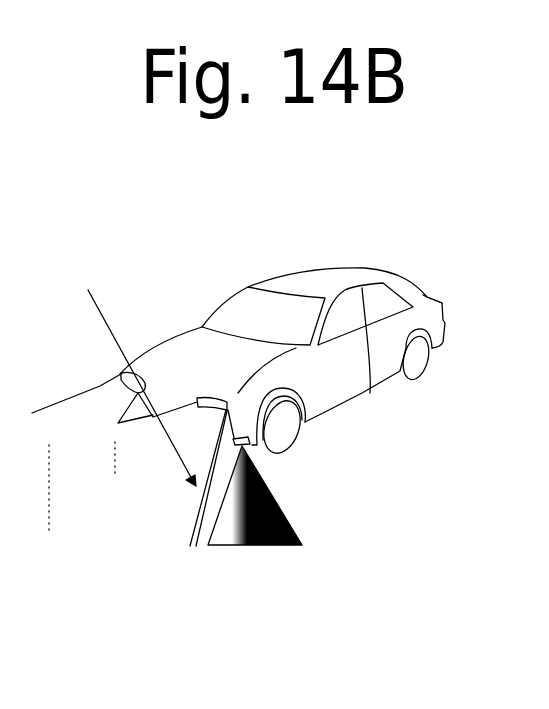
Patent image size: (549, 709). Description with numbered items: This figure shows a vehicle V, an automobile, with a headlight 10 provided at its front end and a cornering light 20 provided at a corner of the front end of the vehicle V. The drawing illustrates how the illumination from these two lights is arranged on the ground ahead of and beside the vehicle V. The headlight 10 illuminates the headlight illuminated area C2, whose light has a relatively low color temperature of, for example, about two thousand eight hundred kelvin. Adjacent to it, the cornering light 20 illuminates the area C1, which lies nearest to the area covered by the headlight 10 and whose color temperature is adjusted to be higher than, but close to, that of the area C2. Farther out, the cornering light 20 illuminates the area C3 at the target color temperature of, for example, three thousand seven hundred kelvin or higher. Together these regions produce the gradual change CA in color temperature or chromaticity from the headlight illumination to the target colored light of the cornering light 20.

The vehicle V is at (372, 268).
The headlight 10 is at (140, 370).
The cornering light 20 is at (120, 373).
The gradual change in color temperature CA is at (129, 379).
The cornering light illuminated area C1 is at (203, 545).
The headlight illuminated area C2 is at (55, 415).
The cornering light illuminated area with target color temperature C3 is at (288, 545).